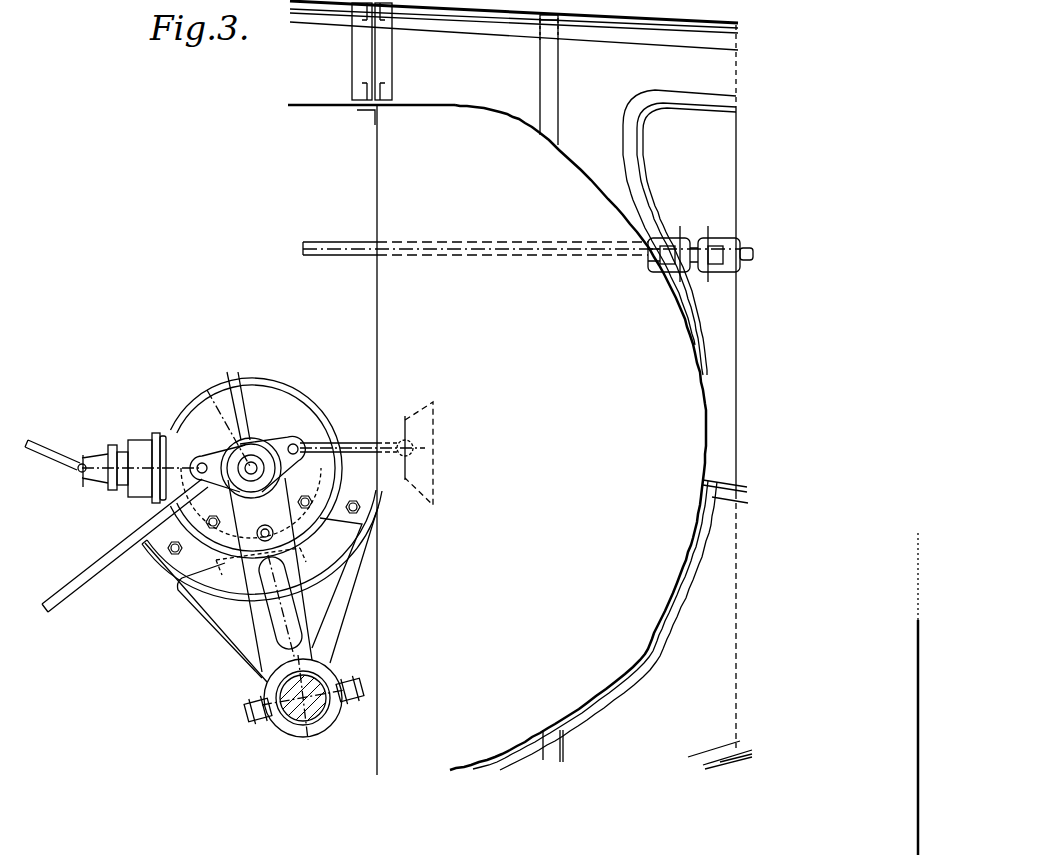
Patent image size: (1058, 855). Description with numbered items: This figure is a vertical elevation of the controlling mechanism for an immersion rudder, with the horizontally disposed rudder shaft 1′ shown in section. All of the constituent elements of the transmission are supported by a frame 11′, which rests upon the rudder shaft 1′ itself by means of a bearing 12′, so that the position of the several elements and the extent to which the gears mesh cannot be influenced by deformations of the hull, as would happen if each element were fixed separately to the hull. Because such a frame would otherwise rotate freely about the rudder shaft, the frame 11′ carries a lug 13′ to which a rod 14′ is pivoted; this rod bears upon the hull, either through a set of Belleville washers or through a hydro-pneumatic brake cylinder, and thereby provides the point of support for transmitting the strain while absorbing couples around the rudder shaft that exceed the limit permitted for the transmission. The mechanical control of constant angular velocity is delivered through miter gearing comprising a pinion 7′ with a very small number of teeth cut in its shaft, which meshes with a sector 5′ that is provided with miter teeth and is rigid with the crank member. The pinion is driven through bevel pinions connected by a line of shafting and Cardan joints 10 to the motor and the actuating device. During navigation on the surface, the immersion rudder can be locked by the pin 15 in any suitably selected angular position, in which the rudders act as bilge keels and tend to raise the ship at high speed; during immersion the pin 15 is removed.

The line of shafting and Cardan joints 10 is at (336, 253).
The pinion 7′ is at (215, 410).
The lug 13′ is at (196, 455).
The rod 14′ is at (97, 565).
The sector 5′ is at (145, 550).
The pin 15 is at (256, 540).
The frame 11′ is at (268, 645).
The rudder shaft 1′ is at (280, 694).
The bearing 12′ is at (330, 710).